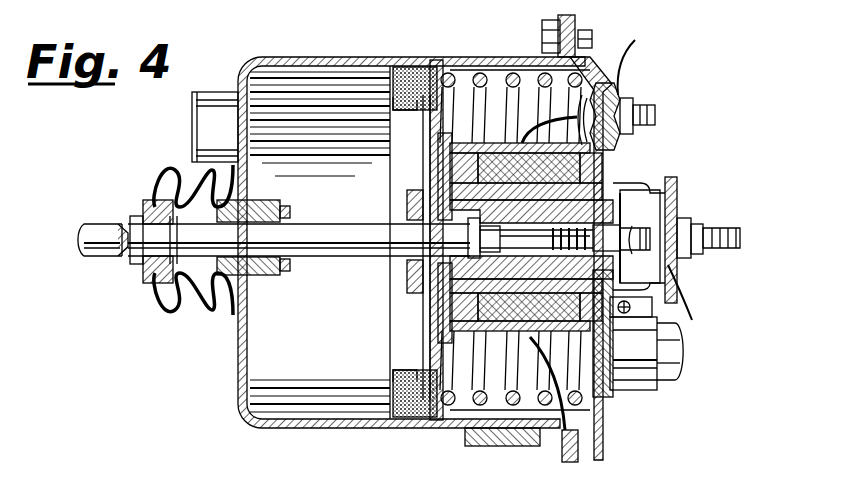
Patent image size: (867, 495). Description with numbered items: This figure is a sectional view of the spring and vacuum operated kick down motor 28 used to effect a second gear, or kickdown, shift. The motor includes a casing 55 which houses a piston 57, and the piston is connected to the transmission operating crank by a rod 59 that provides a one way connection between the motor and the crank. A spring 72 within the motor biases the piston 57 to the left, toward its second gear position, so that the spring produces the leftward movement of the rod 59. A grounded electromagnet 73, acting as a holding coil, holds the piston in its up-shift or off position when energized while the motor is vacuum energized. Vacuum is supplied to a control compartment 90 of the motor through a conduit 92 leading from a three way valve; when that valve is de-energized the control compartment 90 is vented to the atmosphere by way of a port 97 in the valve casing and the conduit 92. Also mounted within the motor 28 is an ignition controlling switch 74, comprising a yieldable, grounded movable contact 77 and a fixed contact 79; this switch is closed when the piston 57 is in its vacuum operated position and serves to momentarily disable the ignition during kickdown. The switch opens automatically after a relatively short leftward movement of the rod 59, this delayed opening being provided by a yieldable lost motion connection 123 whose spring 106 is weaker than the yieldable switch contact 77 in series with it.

The kick down motor 28 is at (322, 57).
The casing 55 is at (433, 62).
The piston 57 is at (415, 170).
The rod 59 is at (100, 228).
The spring 72 is at (452, 405).
The electromagnet 73 is at (600, 393).
The ignition controlling switch 74 is at (672, 228).
The movable contact 77 is at (632, 235).
The fixed contact 79 is at (655, 228).
The control compartment 90 is at (497, 80).
The conduit 92 is at (670, 385).
The port 97 is at (202, 118).
The spring 106 is at (610, 177).
The lost motion connection 123 is at (437, 293).